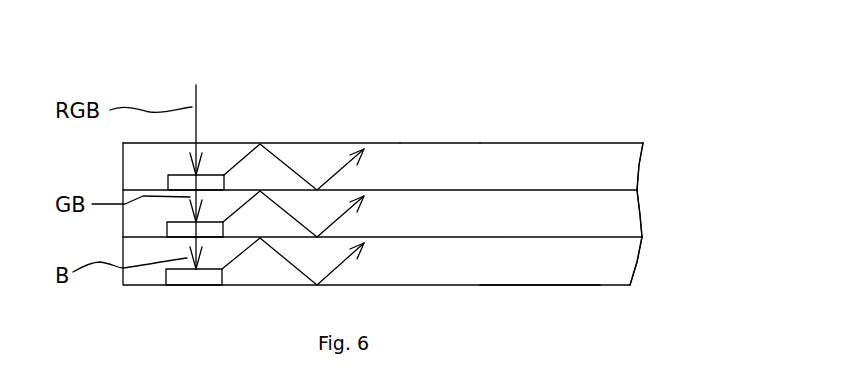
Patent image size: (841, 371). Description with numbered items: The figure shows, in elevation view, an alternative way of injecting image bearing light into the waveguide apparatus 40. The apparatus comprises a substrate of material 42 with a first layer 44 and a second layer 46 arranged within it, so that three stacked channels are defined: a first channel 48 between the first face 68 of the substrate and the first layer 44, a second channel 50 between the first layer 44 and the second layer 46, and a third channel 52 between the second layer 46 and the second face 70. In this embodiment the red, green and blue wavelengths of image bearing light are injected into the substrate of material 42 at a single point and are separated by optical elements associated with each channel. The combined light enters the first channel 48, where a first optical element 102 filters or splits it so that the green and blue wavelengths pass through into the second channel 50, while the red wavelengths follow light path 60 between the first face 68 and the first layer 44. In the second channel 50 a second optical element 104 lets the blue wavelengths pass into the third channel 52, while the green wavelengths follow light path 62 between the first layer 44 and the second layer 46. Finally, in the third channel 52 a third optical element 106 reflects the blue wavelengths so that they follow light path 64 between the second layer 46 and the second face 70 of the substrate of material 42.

The waveguide apparatus 40 is at (650, 98).
The substrate of material 42 is at (612, 155).
The first layer 44 is at (542, 190).
The second layer 46 is at (582, 237).
The first channel 48 is at (632, 163).
The second channel 50 is at (623, 210).
The third channel 52 is at (628, 257).
The light path 60 is at (340, 168).
The light path 62 is at (358, 211).
The light path 64 is at (357, 257).
The first face 68 is at (445, 145).
The second face 70 is at (538, 286).
The first optical element 102 is at (206, 175).
The second optical element 104 is at (178, 232).
The third optical element 106 is at (197, 277).